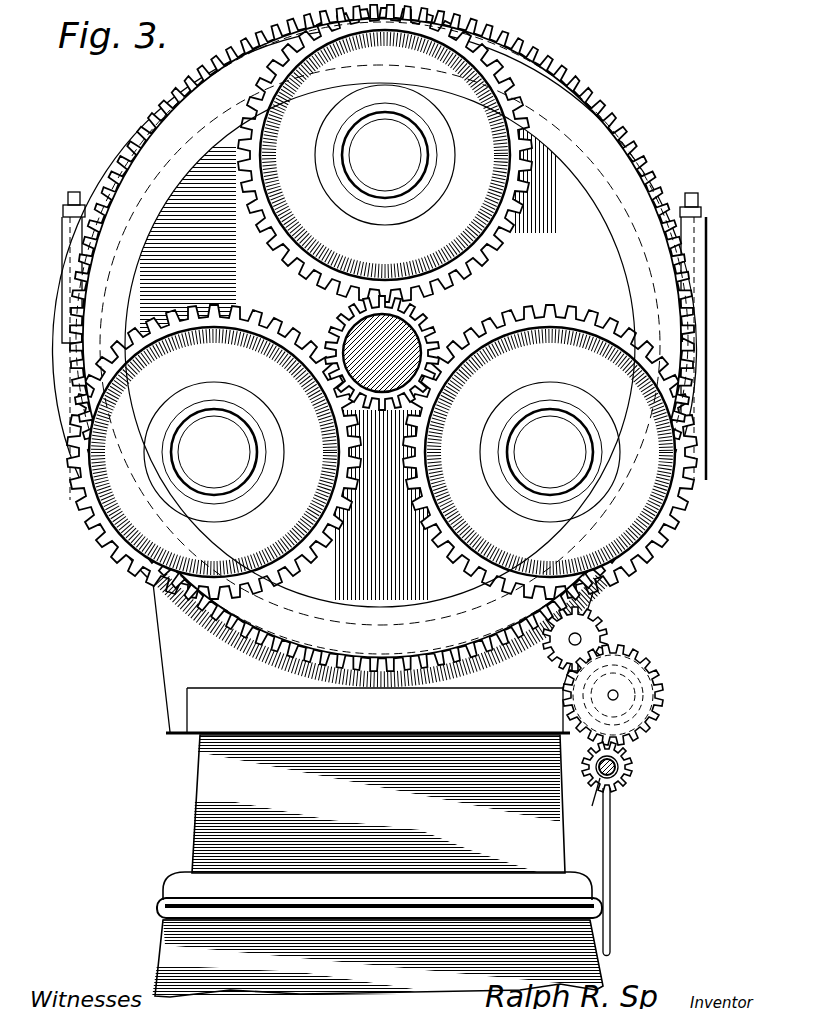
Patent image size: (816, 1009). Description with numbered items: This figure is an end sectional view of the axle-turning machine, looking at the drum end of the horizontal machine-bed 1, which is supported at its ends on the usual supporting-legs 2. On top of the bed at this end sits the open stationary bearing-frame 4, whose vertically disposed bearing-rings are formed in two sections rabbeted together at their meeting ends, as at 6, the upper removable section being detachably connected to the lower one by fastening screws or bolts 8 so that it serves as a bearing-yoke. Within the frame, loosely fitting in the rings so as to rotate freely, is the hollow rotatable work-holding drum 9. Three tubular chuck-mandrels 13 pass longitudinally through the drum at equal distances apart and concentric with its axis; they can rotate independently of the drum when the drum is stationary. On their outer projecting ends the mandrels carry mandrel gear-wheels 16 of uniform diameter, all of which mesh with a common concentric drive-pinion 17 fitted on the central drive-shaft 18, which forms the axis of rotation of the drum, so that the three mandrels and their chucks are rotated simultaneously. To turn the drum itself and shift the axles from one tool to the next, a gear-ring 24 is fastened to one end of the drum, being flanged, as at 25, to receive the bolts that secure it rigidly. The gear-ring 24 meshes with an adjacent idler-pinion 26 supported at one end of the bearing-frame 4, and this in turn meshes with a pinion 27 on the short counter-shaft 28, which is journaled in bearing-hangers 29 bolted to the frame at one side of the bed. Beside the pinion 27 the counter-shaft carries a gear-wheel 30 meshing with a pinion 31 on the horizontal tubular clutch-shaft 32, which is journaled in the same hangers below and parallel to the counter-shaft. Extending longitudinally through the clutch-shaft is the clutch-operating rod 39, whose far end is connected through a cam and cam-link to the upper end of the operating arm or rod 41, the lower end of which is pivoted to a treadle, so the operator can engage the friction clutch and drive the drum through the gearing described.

The machine-bed 1 is at (378, 804).
The supporting-legs 2 is at (176, 948).
The bearing-frame 4 is at (374, 658).
The rabbeted joint 6 is at (700, 349).
The fastening screws or bolts 8 is at (74, 193).
The work-holding drum 9 is at (372, 326).
The chuck-mandrels 13 is at (392, 110).
The mandrel gear-wheels 16 is at (382, 343).
The drive-pinion 17 is at (346, 323).
The drive-shaft 18 is at (350, 372).
The gear-ring 24 is at (610, 177).
The flange 25 is at (588, 198).
The idler-pinion 26 is at (590, 622).
The pinion 27 is at (645, 666).
The counter-shaft 28 is at (616, 695).
The bearing-hangers 29 is at (645, 722).
The gear-wheel 30 is at (637, 738).
The pinion 31 is at (625, 775).
The clutch-shaft 32 is at (620, 766).
The clutch-operating rod 39 is at (600, 778).
The operating arm or rod 41 is at (608, 858).